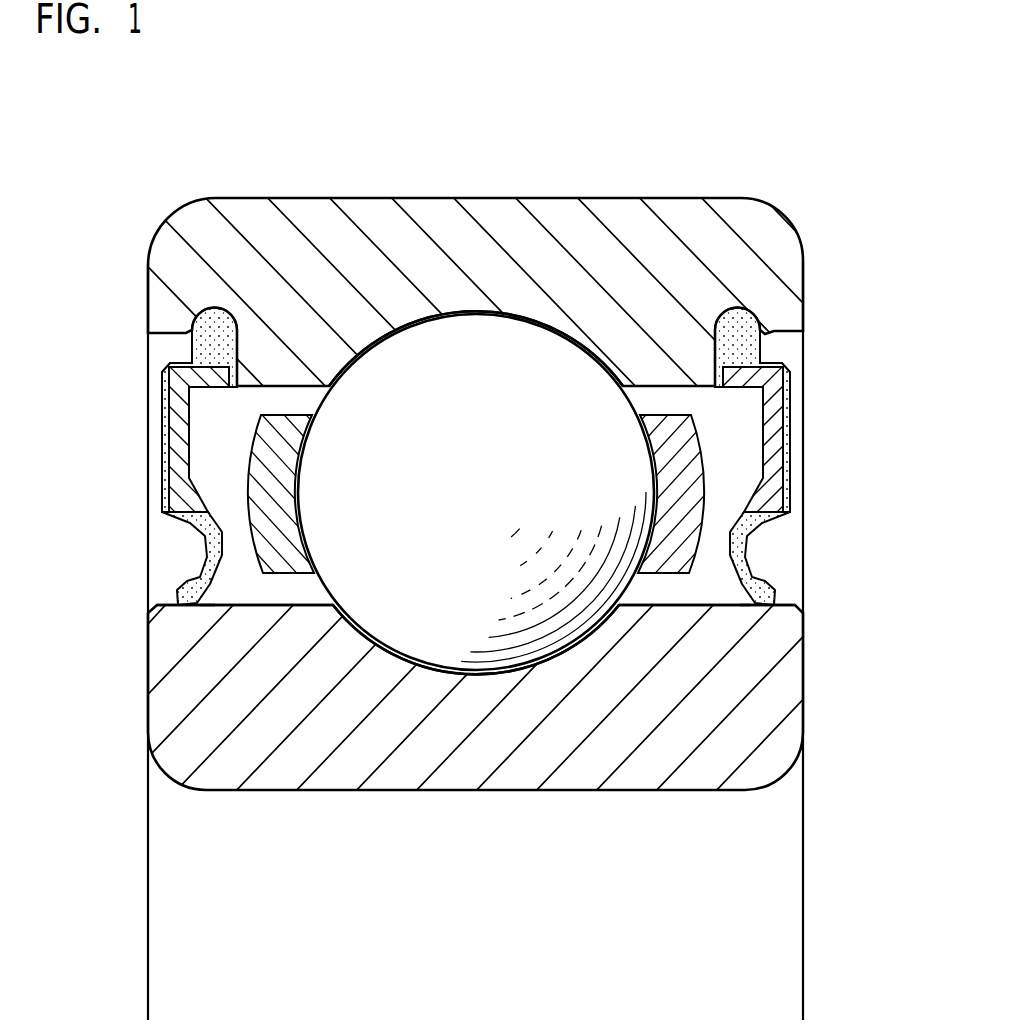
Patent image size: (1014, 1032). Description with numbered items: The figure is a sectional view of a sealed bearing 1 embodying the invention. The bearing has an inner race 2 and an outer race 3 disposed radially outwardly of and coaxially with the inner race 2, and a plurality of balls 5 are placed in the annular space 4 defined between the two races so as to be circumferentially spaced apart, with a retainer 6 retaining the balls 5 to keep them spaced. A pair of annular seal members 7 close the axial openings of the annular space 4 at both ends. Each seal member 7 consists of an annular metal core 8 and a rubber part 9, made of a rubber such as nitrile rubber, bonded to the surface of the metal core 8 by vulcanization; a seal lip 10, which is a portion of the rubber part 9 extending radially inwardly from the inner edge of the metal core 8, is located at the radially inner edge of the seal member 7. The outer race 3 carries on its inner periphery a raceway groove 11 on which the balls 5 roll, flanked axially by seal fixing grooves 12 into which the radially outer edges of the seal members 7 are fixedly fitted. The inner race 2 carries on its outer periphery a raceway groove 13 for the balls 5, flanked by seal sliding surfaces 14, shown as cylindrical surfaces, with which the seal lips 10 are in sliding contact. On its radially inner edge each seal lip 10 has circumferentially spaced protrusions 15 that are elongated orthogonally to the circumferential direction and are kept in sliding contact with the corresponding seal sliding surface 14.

The sealed bearing 1 is at (479, 556).
The inner race 2 is at (787, 684).
The outer race 3 is at (781, 259).
The annular space 4 is at (227, 455).
The balls 5 is at (464, 632).
The retainer 6 is at (275, 502).
The seal member 7 is at (476, 376).
The metal core 8 is at (789, 411).
The rubber part 9 is at (481, 376).
The seal lip 10 is at (178, 580).
The raceway groove 11 is at (432, 314).
The seal fixing grooves 12 is at (200, 316).
The raceway groove 13 is at (365, 631).
The seal sliding surfaces 14 is at (200, 617).
The protrusions 15 is at (198, 618).